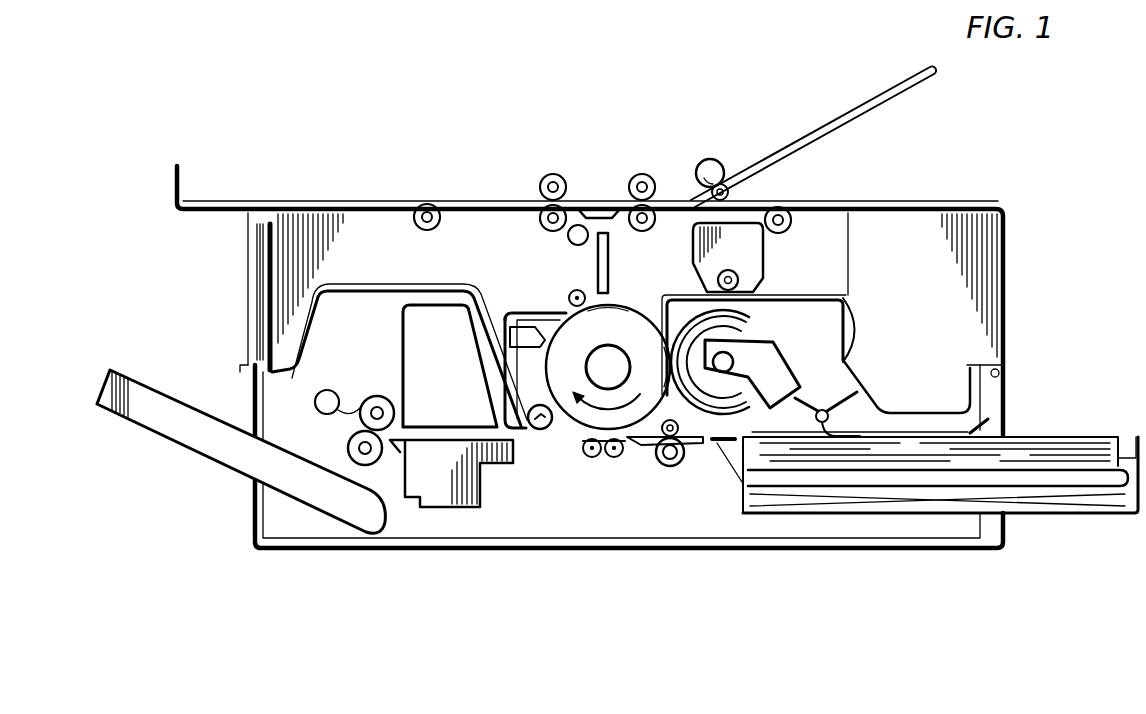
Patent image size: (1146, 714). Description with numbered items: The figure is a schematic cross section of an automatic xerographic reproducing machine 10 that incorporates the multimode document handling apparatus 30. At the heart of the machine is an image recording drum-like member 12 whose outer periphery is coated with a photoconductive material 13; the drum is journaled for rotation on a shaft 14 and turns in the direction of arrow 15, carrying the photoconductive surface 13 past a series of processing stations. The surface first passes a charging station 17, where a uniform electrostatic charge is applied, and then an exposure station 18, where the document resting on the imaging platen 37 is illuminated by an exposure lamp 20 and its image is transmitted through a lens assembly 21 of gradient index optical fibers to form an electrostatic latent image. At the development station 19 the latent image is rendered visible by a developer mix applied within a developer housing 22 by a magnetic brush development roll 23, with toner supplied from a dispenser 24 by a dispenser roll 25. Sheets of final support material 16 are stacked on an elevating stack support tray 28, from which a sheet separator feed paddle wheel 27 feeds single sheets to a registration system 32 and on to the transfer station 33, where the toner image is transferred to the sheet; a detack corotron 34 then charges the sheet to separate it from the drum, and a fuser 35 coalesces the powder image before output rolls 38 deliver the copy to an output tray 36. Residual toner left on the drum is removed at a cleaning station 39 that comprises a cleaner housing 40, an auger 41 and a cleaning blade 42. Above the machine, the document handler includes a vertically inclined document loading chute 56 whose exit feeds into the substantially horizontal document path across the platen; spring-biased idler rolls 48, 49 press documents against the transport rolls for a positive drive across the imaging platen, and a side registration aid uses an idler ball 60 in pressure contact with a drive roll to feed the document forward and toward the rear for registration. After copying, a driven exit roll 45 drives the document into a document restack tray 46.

The automatic xerographic reproducing machine 10 is at (1045, 283).
The image recording drum-like member 12 is at (652, 320).
The photoconductive material 13 is at (556, 302).
The shaft 14 is at (586, 364).
The arrow 15 is at (633, 398).
The sheet of final support material 16 is at (1030, 445).
The charging station 17 is at (571, 292).
The exposure station 18 is at (603, 318).
The development station 19 is at (662, 338).
The exposure lamp 20 is at (566, 241).
The lens assembly 21 is at (609, 260).
The developer housing 22 is at (853, 343).
The magnetic brush development roll 23 is at (765, 336).
The dispenser 24 is at (753, 262).
The dispenser roll 25 is at (716, 280).
The sheet separator feed paddle wheel 27 is at (850, 408).
The elevating stack support tray 28 is at (1138, 436).
The multimode document handling apparatus 30 is at (494, 165).
The registration system 32 is at (672, 467).
The transfer station 33 is at (612, 458).
The detack corotron 34 is at (590, 458).
The fuser 35 is at (420, 332).
The output tray 36 is at (182, 402).
The imaging platen 37 is at (602, 206).
The output rolls 38 is at (349, 448).
The cleaning station 39 is at (497, 300).
The cleaner housing 40 is at (507, 393).
The auger 41 is at (540, 431).
The cleaning blade 42 is at (540, 344).
The driven exit roll 45 is at (425, 205).
The document restack tray 46 is at (239, 205).
The idler roll 48 is at (561, 176).
The idler roll 49 is at (647, 176).
The document loading chute 56 is at (880, 103).
The idler ball 60 is at (710, 159).